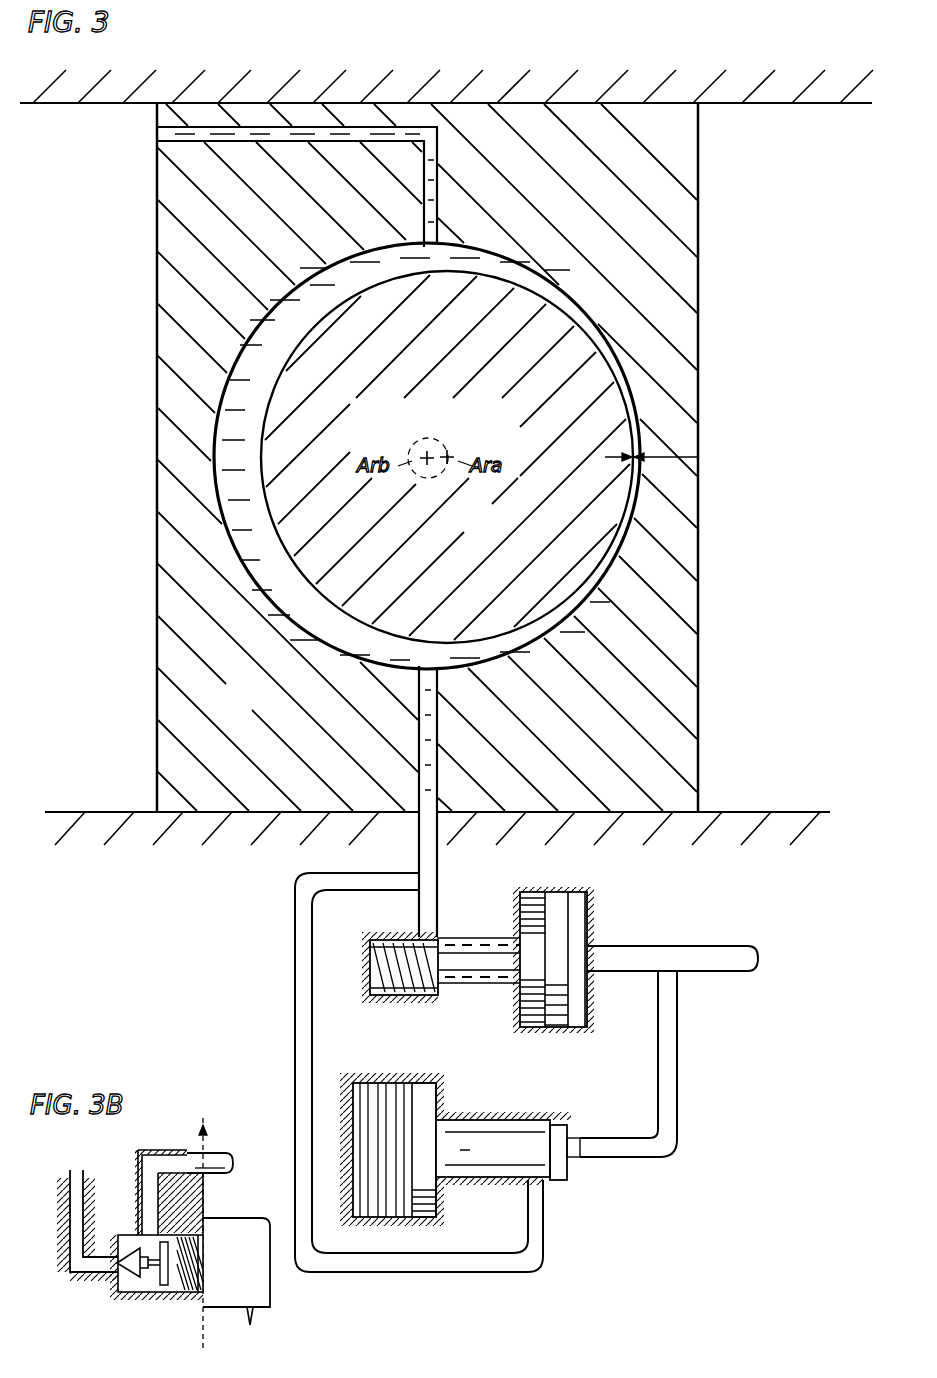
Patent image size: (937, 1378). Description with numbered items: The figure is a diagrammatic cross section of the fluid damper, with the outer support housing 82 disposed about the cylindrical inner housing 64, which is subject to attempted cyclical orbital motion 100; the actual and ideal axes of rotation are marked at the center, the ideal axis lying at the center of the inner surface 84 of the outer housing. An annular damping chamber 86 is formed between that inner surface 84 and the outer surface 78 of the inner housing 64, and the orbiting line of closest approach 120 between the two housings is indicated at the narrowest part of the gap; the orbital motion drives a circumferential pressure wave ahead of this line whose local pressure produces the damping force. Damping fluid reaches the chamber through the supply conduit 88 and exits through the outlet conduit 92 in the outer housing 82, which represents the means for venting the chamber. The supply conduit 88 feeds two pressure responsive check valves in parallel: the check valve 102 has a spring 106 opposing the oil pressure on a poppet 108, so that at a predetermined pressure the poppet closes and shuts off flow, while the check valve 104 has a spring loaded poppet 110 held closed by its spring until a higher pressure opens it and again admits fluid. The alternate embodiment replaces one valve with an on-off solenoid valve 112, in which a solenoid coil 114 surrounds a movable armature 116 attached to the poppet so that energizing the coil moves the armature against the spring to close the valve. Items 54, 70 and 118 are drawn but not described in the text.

In FIG. 3, the drive shaft 54 is at (805, 958).
In FIG. 3B, the drive shaft 54 is at (218, 1153).
In FIG. 3, the inner housing 64 is at (494, 529).
In FIG. 3, the outer wall of annular chamber 70 is at (545, 267).
In FIG. 3, the outer surface 78 is at (262, 500).
In FIG. 3, the outer support housing 82 is at (254, 707).
In FIG. 3, the inner surface 84 is at (268, 591).
In FIG. 3, the damping chamber 86 is at (253, 459).
In FIG. 3, the supply conduit 88 is at (440, 730).
In FIG. 3, the outlet conduit 92 is at (437, 210).
In FIG. 3, the orbital motion 100 is at (430, 435).
In FIG. 3, the check valve 102 is at (566, 888).
In FIG. 3, the check valve 104 is at (446, 1097).
In FIG. 3, the spring 106 is at (400, 1003).
In FIG. 3, the poppet 108 is at (555, 940).
In FIG. 3, the spring loaded poppet 110 is at (512, 1158).
In FIG. 3B, the on-off solenoid valve 112 is at (268, 1300).
In FIG. 3B, the solenoid coil 114 is at (246, 1272).
In FIG. 3B, the movable armature 116 is at (157, 1292).
In FIG. 3B, the valve cone 118 is at (126, 1240).
In FIG. 3, the line of closest approach 120 is at (677, 456).